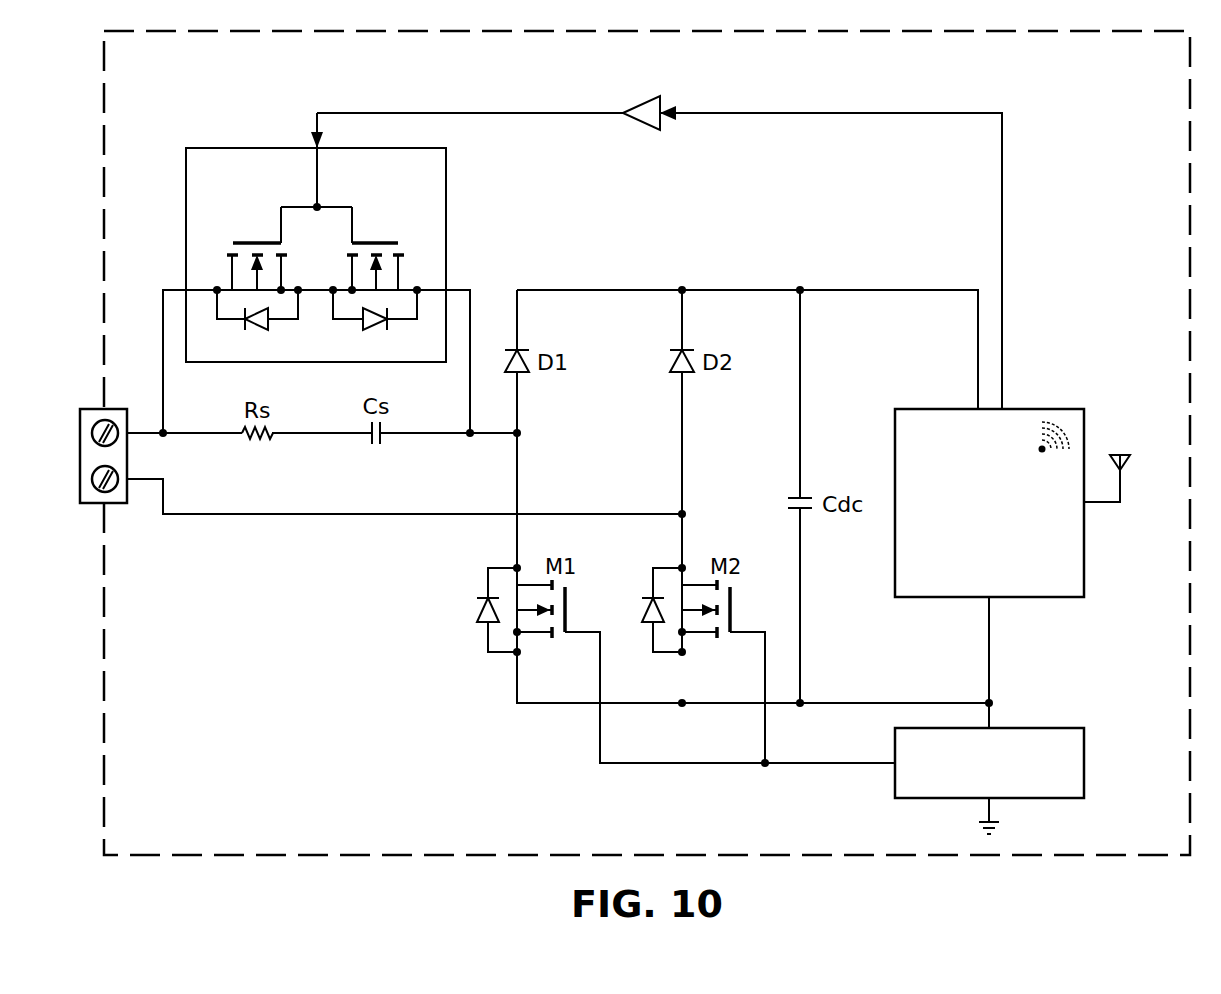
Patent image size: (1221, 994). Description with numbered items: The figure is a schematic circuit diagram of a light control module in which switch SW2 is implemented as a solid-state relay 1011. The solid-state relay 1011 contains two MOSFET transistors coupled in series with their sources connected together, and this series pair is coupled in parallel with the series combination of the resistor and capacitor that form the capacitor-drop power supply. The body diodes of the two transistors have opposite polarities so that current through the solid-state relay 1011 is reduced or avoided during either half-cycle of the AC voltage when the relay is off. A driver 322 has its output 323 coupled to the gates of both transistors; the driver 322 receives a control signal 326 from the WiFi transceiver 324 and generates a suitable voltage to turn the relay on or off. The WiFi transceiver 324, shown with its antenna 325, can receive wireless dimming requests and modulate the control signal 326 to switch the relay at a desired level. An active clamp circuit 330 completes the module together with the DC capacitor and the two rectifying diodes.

The solid-state relay 1011 is at (265, 148).
The driver 322 is at (641, 102).
The control signal input 323 is at (619, 118).
The WiFi transceiver 324 is at (1037, 598).
The antenna 325 is at (1123, 455).
The control signal 326 is at (1003, 243).
The active clamp circuit 330 is at (1084, 775).